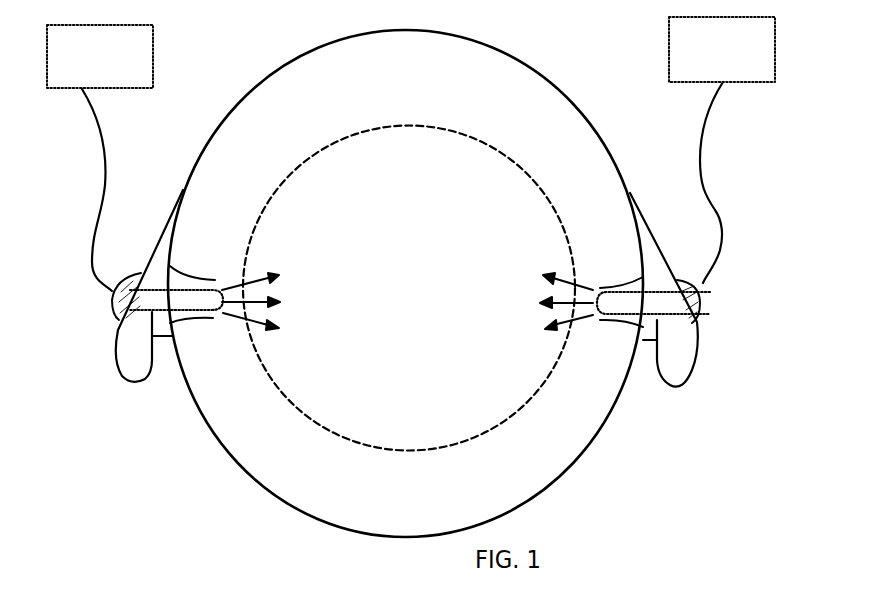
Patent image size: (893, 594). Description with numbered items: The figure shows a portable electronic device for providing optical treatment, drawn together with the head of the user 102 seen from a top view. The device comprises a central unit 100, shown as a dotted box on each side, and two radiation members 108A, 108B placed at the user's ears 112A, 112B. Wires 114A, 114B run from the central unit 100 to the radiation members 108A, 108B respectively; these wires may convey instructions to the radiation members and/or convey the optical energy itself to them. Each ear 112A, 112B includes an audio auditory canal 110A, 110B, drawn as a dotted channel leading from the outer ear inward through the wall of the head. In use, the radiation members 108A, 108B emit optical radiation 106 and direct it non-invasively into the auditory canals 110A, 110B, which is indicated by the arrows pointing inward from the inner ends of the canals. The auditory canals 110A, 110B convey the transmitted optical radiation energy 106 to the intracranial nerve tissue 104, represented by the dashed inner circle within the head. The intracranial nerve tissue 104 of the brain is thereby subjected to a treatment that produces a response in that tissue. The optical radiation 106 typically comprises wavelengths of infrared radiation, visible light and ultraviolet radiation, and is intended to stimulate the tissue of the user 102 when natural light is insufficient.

The central unit 100 is at (411, 52).
The user 102 is at (472, 33).
The intracranial nerve tissue 104 is at (444, 130).
The optical radiation 106 is at (263, 278).
The radiation member 108A is at (115, 313).
The radiation member 108B is at (697, 308).
The audio auditory canal 110A is at (169, 268).
The audio auditory canal 110B is at (638, 279).
The ear 112A is at (130, 381).
The ear 112B is at (681, 391).
The wire 114A is at (90, 260).
The wire 114B is at (723, 226).